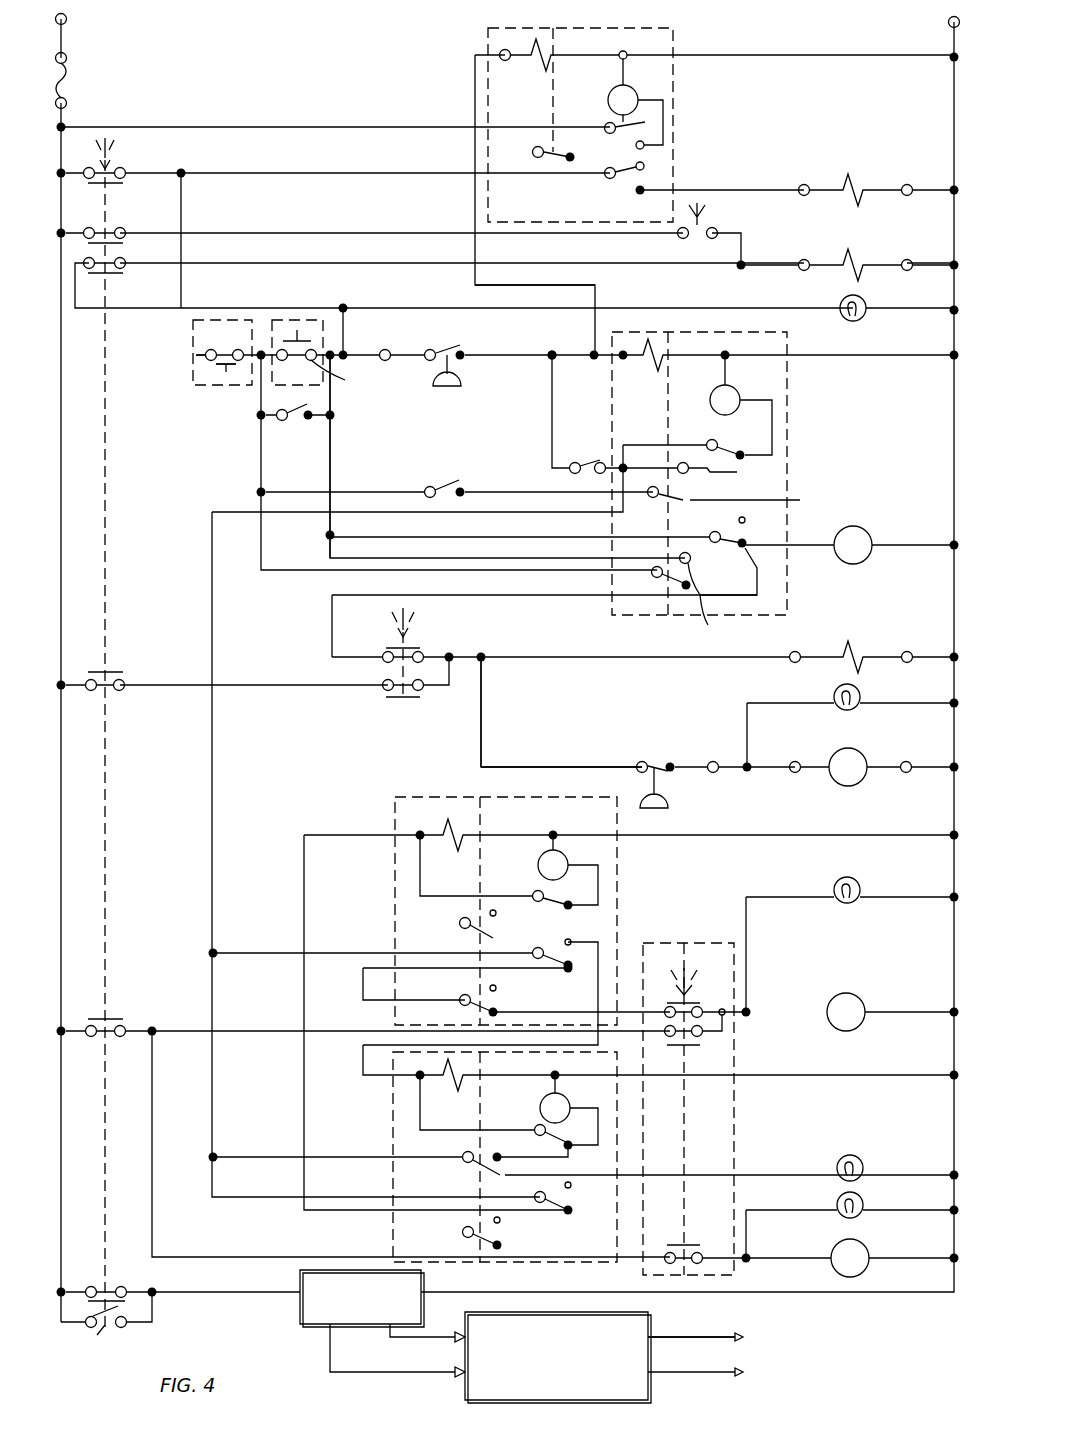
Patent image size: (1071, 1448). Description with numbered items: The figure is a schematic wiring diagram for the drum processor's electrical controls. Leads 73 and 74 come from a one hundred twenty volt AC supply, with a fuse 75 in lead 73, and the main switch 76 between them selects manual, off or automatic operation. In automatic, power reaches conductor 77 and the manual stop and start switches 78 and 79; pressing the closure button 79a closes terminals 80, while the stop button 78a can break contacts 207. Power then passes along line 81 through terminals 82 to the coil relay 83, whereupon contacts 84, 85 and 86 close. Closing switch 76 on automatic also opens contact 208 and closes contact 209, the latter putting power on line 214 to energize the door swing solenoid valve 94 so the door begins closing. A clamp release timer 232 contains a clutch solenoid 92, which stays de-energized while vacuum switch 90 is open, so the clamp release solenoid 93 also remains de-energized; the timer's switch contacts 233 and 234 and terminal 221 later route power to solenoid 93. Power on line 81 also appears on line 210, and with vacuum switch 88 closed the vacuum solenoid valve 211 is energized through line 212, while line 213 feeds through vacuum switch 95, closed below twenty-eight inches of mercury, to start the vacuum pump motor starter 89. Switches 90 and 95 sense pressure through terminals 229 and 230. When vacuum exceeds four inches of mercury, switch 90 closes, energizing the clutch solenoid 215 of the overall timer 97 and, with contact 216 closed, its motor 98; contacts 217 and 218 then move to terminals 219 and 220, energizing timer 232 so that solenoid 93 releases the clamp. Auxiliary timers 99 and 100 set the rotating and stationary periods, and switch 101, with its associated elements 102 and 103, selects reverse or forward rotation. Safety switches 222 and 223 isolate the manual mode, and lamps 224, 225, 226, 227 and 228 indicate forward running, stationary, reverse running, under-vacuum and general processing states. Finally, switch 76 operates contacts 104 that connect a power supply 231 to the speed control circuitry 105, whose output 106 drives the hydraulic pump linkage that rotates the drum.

The lead 73 is at (66, 19).
The fuse 75 is at (67, 80).
The lead 74 is at (948, 22).
The main switch 76 is at (124, 168).
The conductor 77 is at (181, 205).
The contact 208 is at (124, 240).
The contact 209 is at (121, 273).
The manual stop switch 78 is at (230, 320).
The stop button 78a is at (210, 372).
The contacts 207 is at (200, 353).
The closure button 79a is at (297, 330).
The manual start switch 79 is at (322, 322).
The terminals 80 is at (340, 376).
The contacts 84 is at (296, 408).
The line 81 is at (328, 535).
The contacts 85 is at (445, 487).
The vacuum switch 90 is at (432, 348).
The pressure-sensing terminal 229 is at (429, 390).
The line 214 is at (412, 278).
The clamp release timer 232 is at (673, 32).
The clutch solenoid 92 is at (556, 40).
The relay contact 234 is at (645, 142).
The relay contact 233 is at (644, 168).
The terminal 221 is at (648, 175).
The clamp release solenoid 93 is at (862, 186).
The door swing solenoid valve 94 is at (862, 262).
The lamp 228 is at (866, 300).
The clutch solenoid 215 is at (668, 338).
The timer motor 98 is at (740, 393).
The overall timer 97 is at (772, 415).
The contact 216 is at (745, 450).
The contacts 86 is at (600, 462).
The terminal 219 is at (697, 476).
The contact 217 is at (745, 496).
The coil relay 83 is at (868, 532).
The terminals 82 is at (543, 556).
The contact 218 is at (672, 590).
The terminal 220 is at (722, 619).
The line 210 is at (490, 600).
The vacuum switch 88 is at (428, 637).
The vacuum solenoid valve 211 is at (862, 652).
The line 212 is at (570, 700).
The line 213 is at (482, 722).
The lamp 227 is at (858, 690).
The vacuum switch 95 is at (656, 760).
The pressure-sensing terminal 230 is at (668, 800).
The vacuum pump motor starter 89 is at (862, 755).
The safety switch 222 is at (124, 682).
The safety switch 223 is at (126, 1025).
The auxiliary timer 99 is at (617, 860).
The auxiliary timer 100 is at (393, 1108).
The switch 101 is at (700, 940).
The lamp 224 is at (858, 882).
The solenoid 102 is at (860, 998).
The lamp 225 is at (860, 1158).
The lamp 226 is at (863, 1203).
The solenoid 103 is at (865, 1245).
The contacts 104 is at (107, 1331).
The power supply 231 is at (300, 1305).
The speed control circuitry 105 is at (465, 1385).
The output 106 is at (742, 1333).